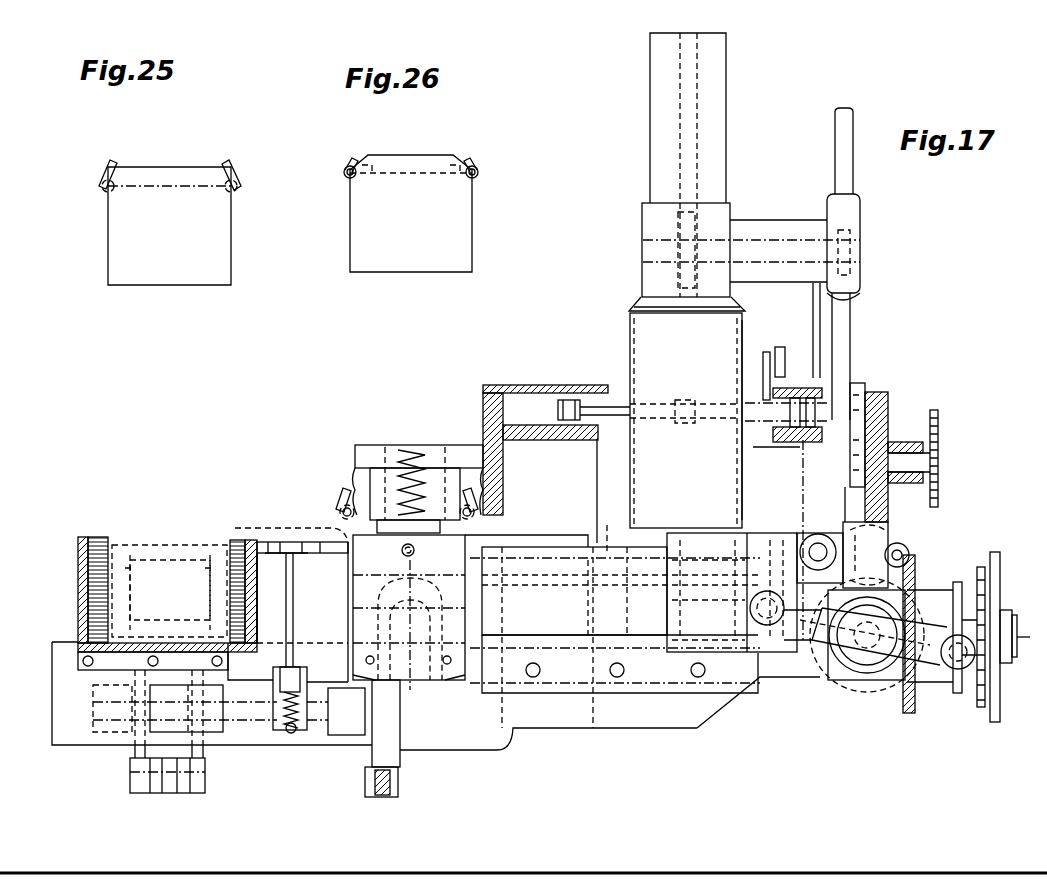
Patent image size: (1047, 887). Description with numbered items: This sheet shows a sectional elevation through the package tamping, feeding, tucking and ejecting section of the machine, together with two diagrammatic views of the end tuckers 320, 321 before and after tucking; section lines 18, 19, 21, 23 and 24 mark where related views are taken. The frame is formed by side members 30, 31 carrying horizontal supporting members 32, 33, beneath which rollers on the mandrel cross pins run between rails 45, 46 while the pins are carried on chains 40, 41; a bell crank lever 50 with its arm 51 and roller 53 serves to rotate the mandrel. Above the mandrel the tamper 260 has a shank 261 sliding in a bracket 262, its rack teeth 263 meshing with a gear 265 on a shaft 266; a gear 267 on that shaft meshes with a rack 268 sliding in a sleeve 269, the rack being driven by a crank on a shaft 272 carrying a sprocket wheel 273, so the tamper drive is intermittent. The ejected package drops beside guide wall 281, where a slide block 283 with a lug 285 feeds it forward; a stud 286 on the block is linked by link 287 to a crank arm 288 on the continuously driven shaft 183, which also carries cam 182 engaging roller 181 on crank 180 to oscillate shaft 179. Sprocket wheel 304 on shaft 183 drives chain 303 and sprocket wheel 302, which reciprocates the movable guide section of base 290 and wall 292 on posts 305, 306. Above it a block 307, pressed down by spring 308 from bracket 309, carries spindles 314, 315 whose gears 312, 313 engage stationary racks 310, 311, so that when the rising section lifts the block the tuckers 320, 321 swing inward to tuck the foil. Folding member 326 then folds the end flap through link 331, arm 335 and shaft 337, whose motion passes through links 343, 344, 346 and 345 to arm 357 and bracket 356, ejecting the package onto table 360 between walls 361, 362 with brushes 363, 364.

In FIG. 17, the section line 18— 18 is at (78, 393).
In FIG. 17, the section line 19— 19 is at (42, 633).
In FIG. 17, the section line 21— 21 is at (408, 393).
In FIG. 17, the section line 23— 23 is at (230, 495).
In FIG. 17, the section line 24— 24 is at (116, 495).
In FIG. 17, the side member 30 is at (890, 412).
In FIG. 17, the side member 31 is at (483, 401).
In FIG. 17, the horizontal supporting member 32 is at (868, 396).
In FIG. 17, the horizontal supporting member 33 is at (553, 385).
In FIG. 17, the chain 40 is at (585, 403).
In FIG. 17, the chain 41 is at (806, 393).
In FIG. 17, the ledge or rail 45 is at (775, 448).
In FIG. 17, the ledge or rail 46 is at (598, 441).
In FIG. 17, the bell crank lever 50 is at (632, 339).
In FIG. 17, the arm 51 is at (760, 360).
In FIG. 17, the roller 53 is at (780, 348).
In FIG. 17, the shaft 179 is at (847, 484).
In FIG. 17, the crank 180 is at (888, 531).
In FIG. 17, the roller 181 is at (910, 556).
In FIG. 17, the cam 182 is at (905, 702).
In FIG. 17, the shaft 183 is at (830, 678).
In FIG. 17, the plunger or tamper 260 is at (627, 308).
In FIG. 17, the shank 261 is at (722, 181).
In FIG. 17, the bracket 262 is at (730, 207).
In FIG. 17, the rack teeth 263 is at (680, 102).
In FIG. 17, the gear 265 is at (645, 269).
In FIG. 17, the shaft 266 is at (765, 240).
In FIG. 17, the gear 267 is at (862, 239).
In FIG. 17, the rack 268 is at (850, 185).
In FIG. 17, the sleeve 269 is at (860, 287).
In FIG. 17, the shaft 272 is at (912, 467).
In FIG. 17, the sprocket wheel 273 is at (939, 422).
In FIG. 17, the guide wall 281 is at (610, 534).
In FIG. 17, the slide block 283 is at (708, 627).
In FIG. 17, the lug 285 is at (820, 548).
In FIG. 17, the stud 286 is at (760, 608).
In FIG. 17, the link 287 is at (802, 628).
In FIG. 17, the crank arm 288 is at (866, 655).
In FIG. 17, the base 290 is at (358, 661).
In FIG. 17, the wall 292 is at (363, 623).
In FIG. 17, the sprocket wheel 302 is at (490, 599).
In FIG. 17, the chain 303 is at (645, 740).
In FIG. 17, the sprocket wheel 304 is at (755, 712).
In FIG. 17, the vertical post 305 is at (288, 605).
In FIG. 17, the vertical post 306 is at (478, 568).
In FIG. 17, the block 307 is at (368, 470).
In FIG. 17, the spring 308 is at (403, 462).
In FIG. 17, the bracket 309 is at (448, 452).
In FIG. 17, the stationary rack 310 is at (355, 481).
In FIG. 17, the stationary rack 311 is at (486, 482).
In FIG. 17, the gear 312 is at (344, 499).
In FIG. 17, the gear 313 is at (475, 503).
In FIG. 25, the spindle 314 is at (104, 189).
In FIG. 26, the spindle 314 is at (345, 176).
In FIG. 17, the spindle 314 is at (340, 514).
In FIG. 25, the spindle 315 is at (236, 189).
In FIG. 26, the spindle 315 is at (478, 177).
In FIG. 17, the spindle 315 is at (476, 513).
In FIG. 25, the tucker 320 is at (105, 165).
In FIG. 26, the tucker 320 is at (352, 165).
In FIG. 17, the tucker 320 is at (340, 503).
In FIG. 25, the tucker 321 is at (233, 164).
In FIG. 26, the tucker 321 is at (470, 165).
In FIG. 17, the tucker 321 is at (500, 502).
In FIG. 17, the folding member 326 is at (272, 598).
In FIG. 17, the link 331 is at (287, 616).
In FIG. 17, the arm 335 is at (287, 680).
In FIG. 17, the shaft 337 is at (320, 735).
In FIG. 17, the link 343 is at (392, 757).
In FIG. 17, the link 344 is at (376, 781).
In FIG. 17, the link 345 is at (128, 752).
In FIG. 17, the link 346 is at (200, 730).
In FIG. 17, the bracket 356 is at (170, 540).
In FIG. 17, the arm 357 is at (210, 547).
In FIG. 17, the table 360 is at (80, 658).
In FIG. 17, the wall 361 is at (80, 572).
In FIG. 17, the wall 362 is at (268, 540).
In FIG. 17, the brush 363 is at (97, 536).
In FIG. 17, the brush 364 is at (258, 503).